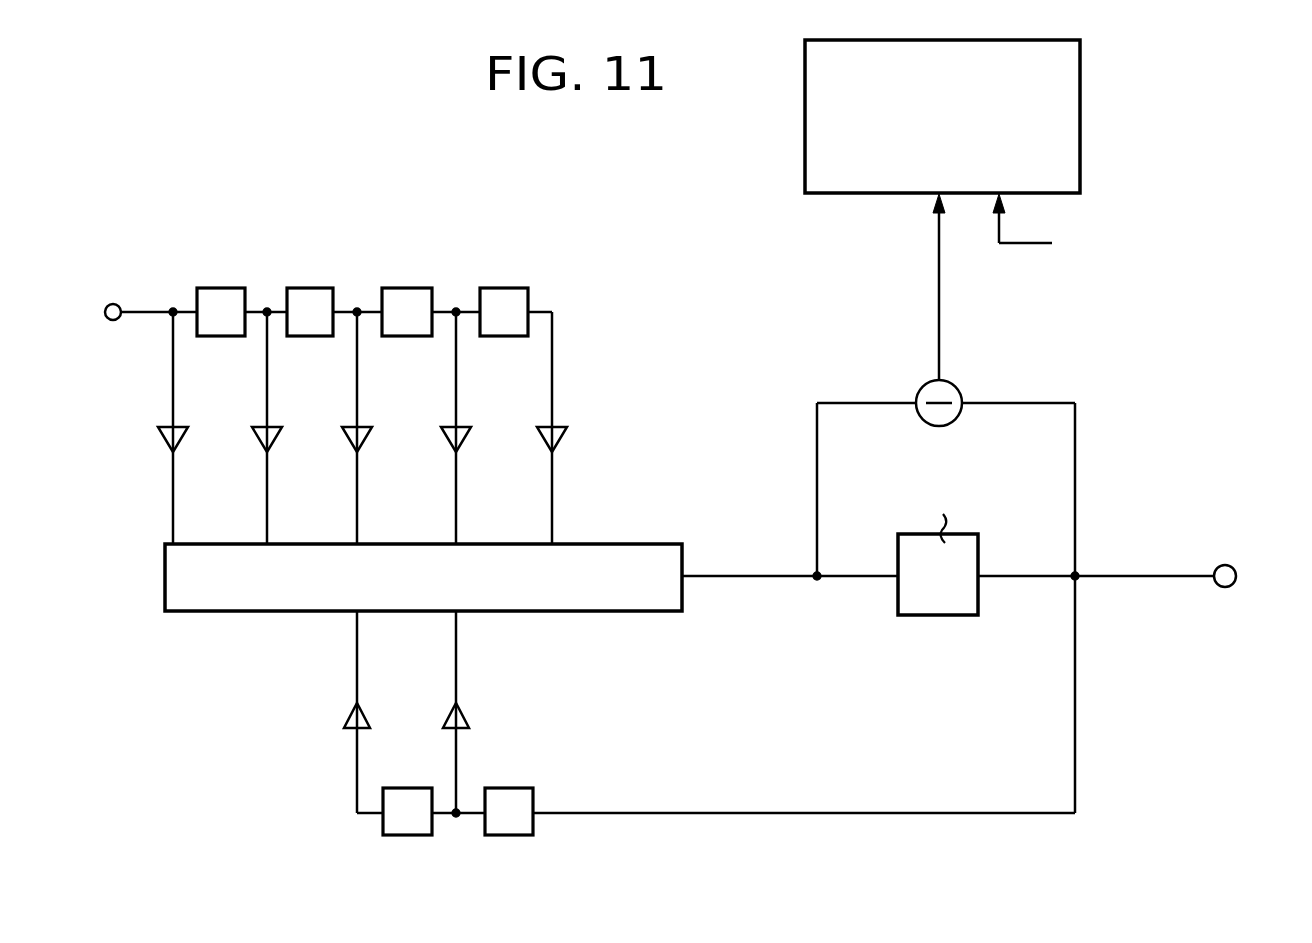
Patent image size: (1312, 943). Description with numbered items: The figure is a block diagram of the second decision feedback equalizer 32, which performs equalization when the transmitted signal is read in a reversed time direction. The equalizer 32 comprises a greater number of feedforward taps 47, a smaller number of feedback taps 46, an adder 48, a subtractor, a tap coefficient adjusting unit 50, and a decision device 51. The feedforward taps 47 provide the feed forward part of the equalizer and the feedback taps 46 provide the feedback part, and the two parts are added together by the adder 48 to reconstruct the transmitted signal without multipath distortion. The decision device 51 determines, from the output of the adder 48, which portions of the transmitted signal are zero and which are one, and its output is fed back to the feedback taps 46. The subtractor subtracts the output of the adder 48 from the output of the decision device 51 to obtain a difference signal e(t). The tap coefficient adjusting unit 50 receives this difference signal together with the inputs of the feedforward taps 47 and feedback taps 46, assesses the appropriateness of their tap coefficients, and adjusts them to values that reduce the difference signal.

The second decision feedback equalizer 32 is at (240, 202).
The feedforward taps 47 is at (598, 252).
The adder 48 is at (165, 568).
The feedback taps 46 is at (532, 853).
The tap coefficient adjusting unit 50 is at (1082, 81).
The decision device 51 is at (940, 616).